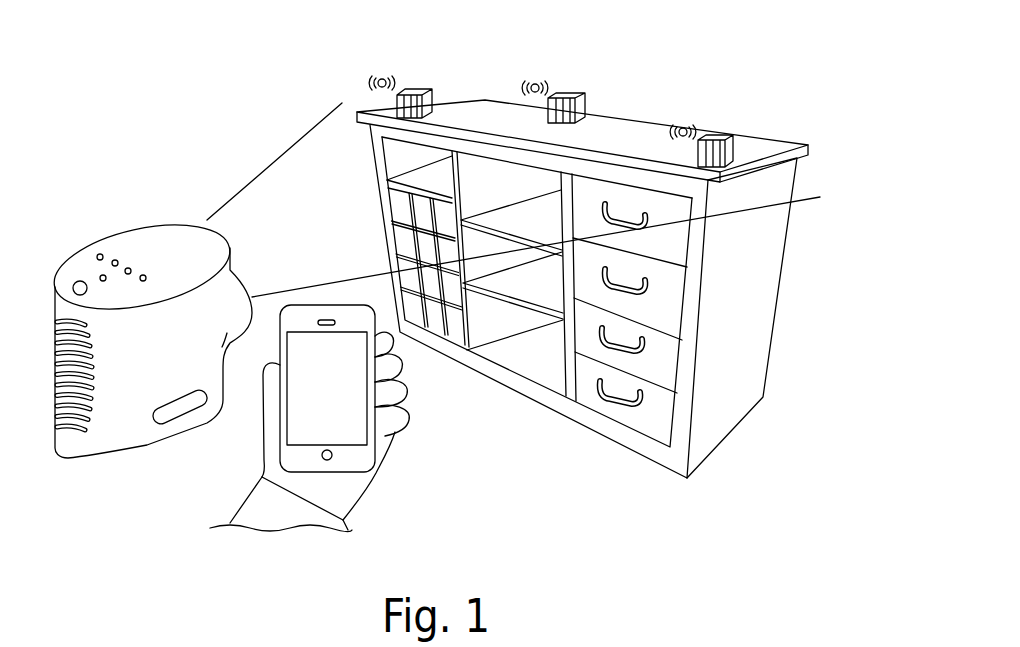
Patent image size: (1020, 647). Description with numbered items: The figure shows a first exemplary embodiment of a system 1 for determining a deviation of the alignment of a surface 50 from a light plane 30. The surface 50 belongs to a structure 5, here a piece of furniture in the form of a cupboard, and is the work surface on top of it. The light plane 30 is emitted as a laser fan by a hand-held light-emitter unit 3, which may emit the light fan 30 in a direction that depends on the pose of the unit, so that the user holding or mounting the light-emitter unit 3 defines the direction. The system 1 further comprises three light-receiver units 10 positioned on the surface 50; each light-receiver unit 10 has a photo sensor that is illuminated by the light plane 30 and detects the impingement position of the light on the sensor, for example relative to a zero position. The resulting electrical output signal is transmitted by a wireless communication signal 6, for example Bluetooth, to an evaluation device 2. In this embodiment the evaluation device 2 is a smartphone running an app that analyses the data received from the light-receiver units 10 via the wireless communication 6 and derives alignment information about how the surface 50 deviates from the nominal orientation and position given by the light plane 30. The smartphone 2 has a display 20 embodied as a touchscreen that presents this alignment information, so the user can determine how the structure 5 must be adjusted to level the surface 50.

The system 1 is at (176, 94).
The evaluation device 2 is at (379, 413).
The hand-held light-emitter unit 3 is at (109, 217).
The structure 5 is at (614, 268).
The wireless communication signal 6 is at (359, 59).
The light-receiver unit 10 is at (413, 90).
The display 20 is at (295, 422).
The light plane 30 is at (267, 167).
The surface 50 is at (778, 148).